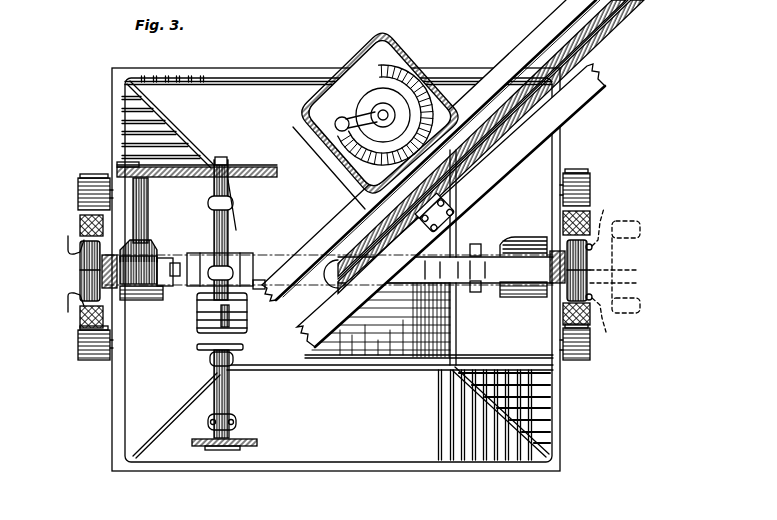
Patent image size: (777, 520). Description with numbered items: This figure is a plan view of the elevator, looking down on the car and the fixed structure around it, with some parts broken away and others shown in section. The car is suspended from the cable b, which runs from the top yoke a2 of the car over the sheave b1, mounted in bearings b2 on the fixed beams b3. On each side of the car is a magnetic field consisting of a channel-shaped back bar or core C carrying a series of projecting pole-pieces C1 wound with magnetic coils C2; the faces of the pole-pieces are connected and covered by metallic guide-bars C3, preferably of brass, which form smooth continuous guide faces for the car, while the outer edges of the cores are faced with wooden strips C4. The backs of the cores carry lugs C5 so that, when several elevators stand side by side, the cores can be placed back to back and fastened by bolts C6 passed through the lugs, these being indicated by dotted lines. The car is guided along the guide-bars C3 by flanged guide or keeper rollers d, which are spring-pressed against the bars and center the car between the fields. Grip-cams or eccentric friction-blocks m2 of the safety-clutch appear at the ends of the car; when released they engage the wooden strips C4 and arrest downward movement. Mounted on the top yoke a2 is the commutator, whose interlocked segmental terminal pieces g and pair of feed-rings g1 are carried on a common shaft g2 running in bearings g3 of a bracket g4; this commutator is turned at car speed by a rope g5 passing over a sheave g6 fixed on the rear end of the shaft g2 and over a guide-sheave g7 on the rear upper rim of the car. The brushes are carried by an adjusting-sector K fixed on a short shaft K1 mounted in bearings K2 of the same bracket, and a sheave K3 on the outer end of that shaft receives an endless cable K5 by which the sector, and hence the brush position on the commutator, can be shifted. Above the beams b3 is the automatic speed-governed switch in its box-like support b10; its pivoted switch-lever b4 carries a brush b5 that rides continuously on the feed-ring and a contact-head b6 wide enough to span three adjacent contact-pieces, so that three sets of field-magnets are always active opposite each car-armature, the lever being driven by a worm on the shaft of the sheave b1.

The top yoke a2 is at (300, 252).
The cable b is at (612, 40).
The sheave b1 is at (362, 202).
The bearings b2 is at (460, 214).
The fixed beams b3 is at (540, 43).
The switch-lever b4 is at (372, 108).
The brush contact b5 is at (390, 122).
The contact-head b6 is at (388, 112).
The box-like support b10 is at (404, 64).
The segmental terminal pieces g is at (197, 313).
The feed-rings g1 is at (188, 266).
The commutator shaft g2 is at (224, 158).
The bearings g3 is at (230, 210).
The bracket g4 is at (214, 232).
The rope g5 is at (117, 170).
The sheave g6 is at (250, 167).
The guide-sheave g7 is at (117, 164).
The adjusting-sector K is at (197, 346).
The short shaft K1 is at (229, 388).
The bearings K2 is at (210, 358).
The sheave K3 is at (255, 440).
The endless cable K5 is at (205, 448).
The back bar C is at (80, 258).
The pole-pieces C1 is at (102, 280).
The magnetic coils C2 is at (102, 268).
The guide-bars C3 is at (619, 280).
The wooden strips C4 is at (80, 222).
The lugs C5 is at (68, 242).
The bolts C6 is at (618, 220).
The grip-cams m2 is at (78, 186).
The guide rollers d is at (128, 300).